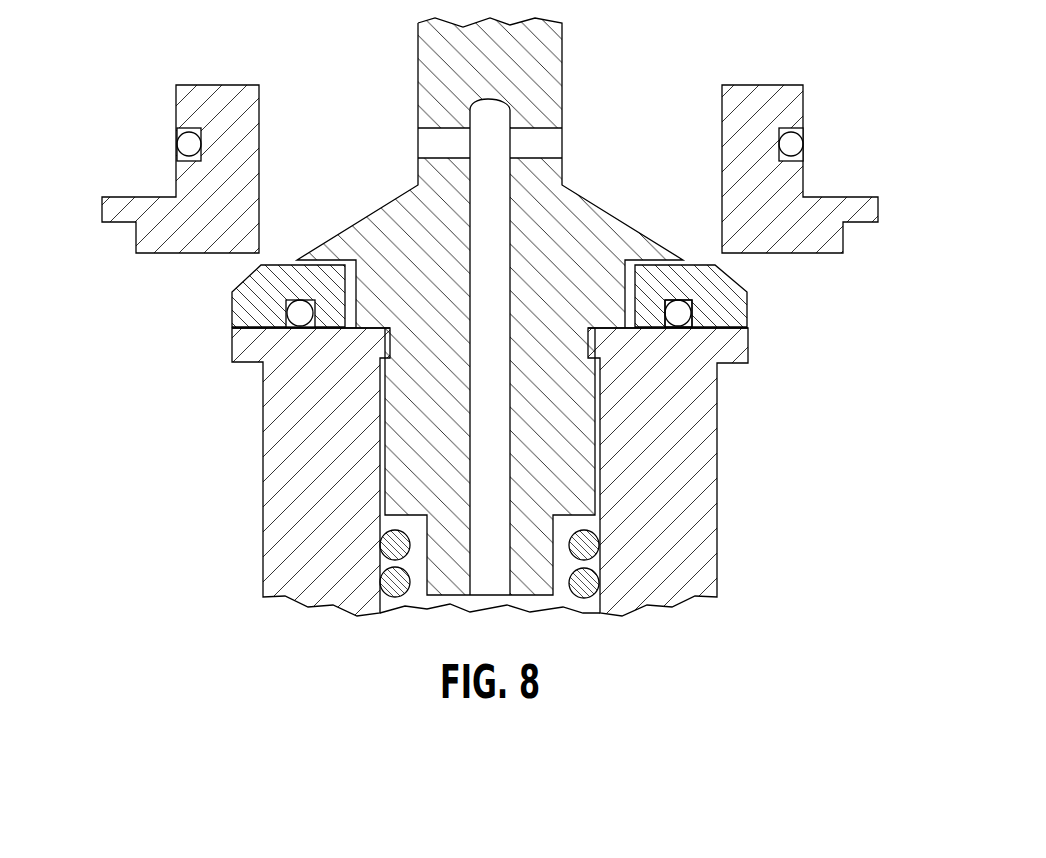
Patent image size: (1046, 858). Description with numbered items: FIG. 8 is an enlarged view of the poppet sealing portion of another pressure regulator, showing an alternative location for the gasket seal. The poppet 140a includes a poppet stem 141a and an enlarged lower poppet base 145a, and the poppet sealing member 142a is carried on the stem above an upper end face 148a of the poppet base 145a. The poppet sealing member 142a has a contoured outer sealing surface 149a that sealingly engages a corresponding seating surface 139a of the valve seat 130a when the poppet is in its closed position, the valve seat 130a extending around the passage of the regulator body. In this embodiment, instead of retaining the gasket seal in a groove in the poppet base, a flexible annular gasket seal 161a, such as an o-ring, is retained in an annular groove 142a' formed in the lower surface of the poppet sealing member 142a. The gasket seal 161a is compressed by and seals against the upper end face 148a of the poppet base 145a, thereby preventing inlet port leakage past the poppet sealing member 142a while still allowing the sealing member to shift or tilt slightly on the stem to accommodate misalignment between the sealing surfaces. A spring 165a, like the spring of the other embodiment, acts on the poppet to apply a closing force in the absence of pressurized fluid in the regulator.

The sealing arrangement 140a is at (664, 64).
The housing body 141a is at (543, 59).
The bearing block 130a is at (166, 233).
The gap 139a is at (260, 253).
The seal ring 149a is at (248, 286).
The poppet sealing member 142a is at (242, 344).
The annular groove 142a' is at (750, 318).
The upper end face 148a is at (605, 327).
The gasket seal 161a is at (676, 320).
The poppet base 145a is at (293, 447).
The O-rings 165a is at (590, 543).